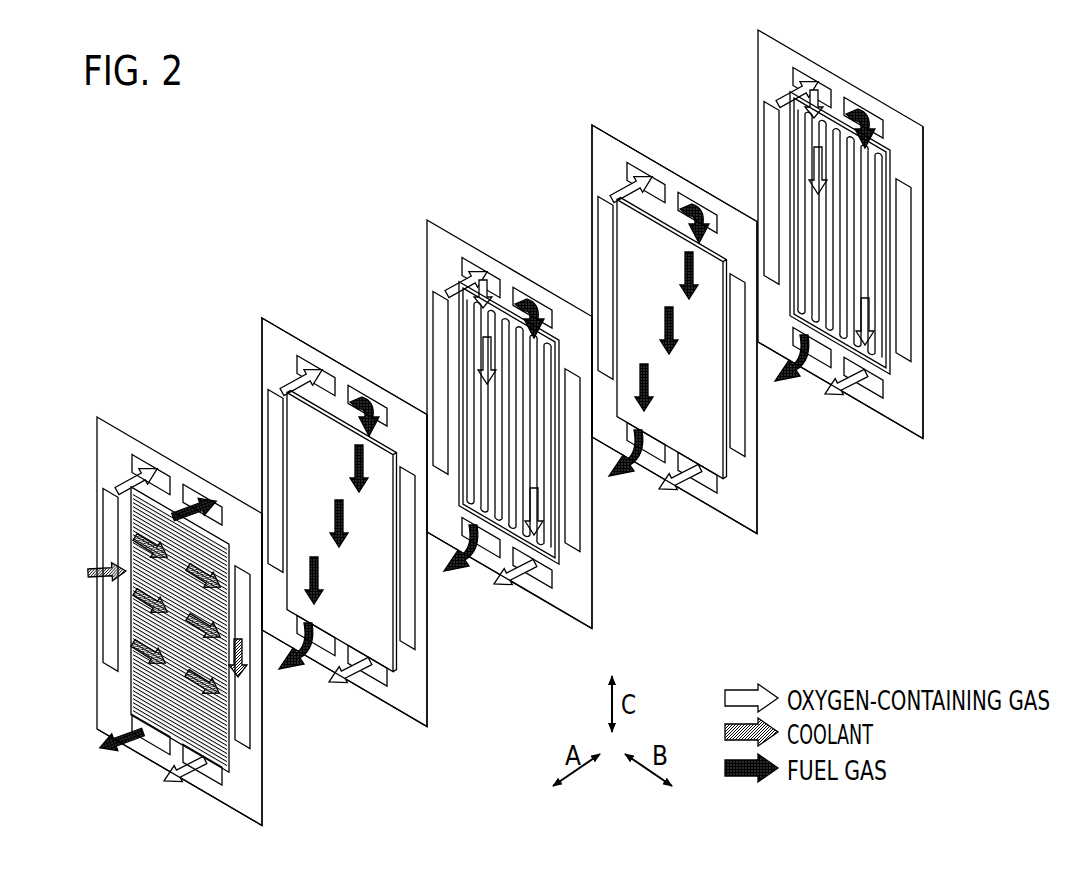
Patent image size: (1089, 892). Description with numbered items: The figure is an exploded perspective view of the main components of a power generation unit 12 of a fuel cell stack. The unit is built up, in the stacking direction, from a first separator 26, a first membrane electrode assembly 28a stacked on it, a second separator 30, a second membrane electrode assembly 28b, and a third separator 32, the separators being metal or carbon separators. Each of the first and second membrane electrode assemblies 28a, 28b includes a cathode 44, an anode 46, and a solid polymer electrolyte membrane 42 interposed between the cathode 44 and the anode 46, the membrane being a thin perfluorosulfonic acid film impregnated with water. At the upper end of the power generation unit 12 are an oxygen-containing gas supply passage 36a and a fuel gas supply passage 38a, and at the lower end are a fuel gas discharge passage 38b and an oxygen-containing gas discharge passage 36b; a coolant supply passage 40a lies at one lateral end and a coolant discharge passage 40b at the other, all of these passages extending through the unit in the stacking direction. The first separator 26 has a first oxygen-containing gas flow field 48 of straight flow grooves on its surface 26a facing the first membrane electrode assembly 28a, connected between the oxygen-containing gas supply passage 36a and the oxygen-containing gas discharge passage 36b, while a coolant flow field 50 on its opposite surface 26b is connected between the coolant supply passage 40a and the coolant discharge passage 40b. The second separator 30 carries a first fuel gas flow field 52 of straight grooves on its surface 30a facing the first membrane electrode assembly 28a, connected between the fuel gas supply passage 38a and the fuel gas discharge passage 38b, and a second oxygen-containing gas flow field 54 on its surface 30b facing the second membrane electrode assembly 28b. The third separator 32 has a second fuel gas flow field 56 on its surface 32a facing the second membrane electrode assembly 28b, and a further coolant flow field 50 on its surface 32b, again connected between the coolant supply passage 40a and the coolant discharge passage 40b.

The power generation unit 12 is at (147, 177).
The first separator 26 is at (840, 219).
The surface of first separator 26a is at (905, 425).
The surface of first separator 26b is at (905, 395).
The first membrane electrode assembly 28a is at (592, 127).
The second membrane electrode assembly 28b is at (262, 318).
The second separator 30 is at (509, 409).
The surface of second separator 30a is at (577, 587).
The surface of second separator 30b is at (573, 612).
The third separator 32 is at (176, 607).
The surface of third separator 32a is at (247, 781).
The surface of third separator 32b is at (242, 808).
The oxygen-containing gas supply passage 36a is at (163, 478).
The oxygen-containing gas discharge passage 36b is at (217, 773).
The fuel gas supply passage 38a is at (197, 502).
The fuel gas discharge passage 38b is at (165, 737).
The coolant supply passage 40a is at (110, 542).
The coolant discharge passage 40b is at (240, 730).
The solid polymer electrolyte membrane 42 is at (427, 710).
The cathode 44 is at (325, 428).
The anode 46 is at (325, 486).
The first oxygen-containing gas flow field 48 is at (800, 165).
The coolant flow field 50 is at (147, 628).
The first fuel gas flow field 52 is at (450, 326).
The second oxygen-containing gas flow field 54 is at (470, 358).
The second fuel gas flow field 56 is at (133, 568).